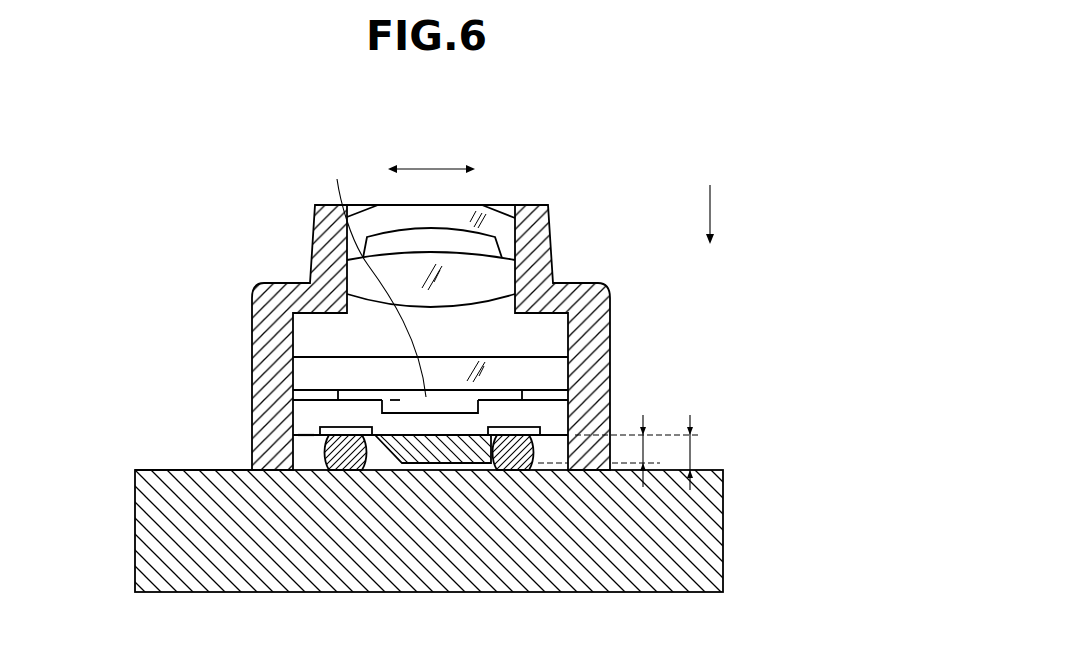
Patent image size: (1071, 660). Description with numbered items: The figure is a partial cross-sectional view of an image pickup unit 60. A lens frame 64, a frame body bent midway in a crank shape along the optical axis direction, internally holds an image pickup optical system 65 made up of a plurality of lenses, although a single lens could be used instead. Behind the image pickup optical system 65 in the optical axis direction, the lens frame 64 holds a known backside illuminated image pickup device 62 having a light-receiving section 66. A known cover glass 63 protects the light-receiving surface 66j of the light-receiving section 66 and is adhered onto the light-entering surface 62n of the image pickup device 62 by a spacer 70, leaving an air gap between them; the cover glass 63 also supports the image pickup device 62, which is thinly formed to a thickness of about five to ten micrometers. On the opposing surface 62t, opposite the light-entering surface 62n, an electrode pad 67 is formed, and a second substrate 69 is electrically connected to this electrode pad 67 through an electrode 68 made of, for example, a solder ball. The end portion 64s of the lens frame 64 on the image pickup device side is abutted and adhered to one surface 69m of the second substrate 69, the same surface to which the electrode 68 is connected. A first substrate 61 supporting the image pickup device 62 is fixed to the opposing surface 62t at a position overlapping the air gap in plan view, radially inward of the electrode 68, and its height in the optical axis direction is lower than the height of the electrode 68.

The image pickup unit 60 is at (630, 178).
The first substrate 61 is at (433, 458).
The image pickup device 62 is at (318, 419).
The light-entering surface 62n is at (357, 399).
The opposing surface 62t is at (306, 438).
The cover glass 63 is at (310, 377).
The lens frame 64 is at (549, 222).
The end portion 64s is at (583, 463).
The image pickup optical system 65 is at (490, 279).
The light-receiving section 66 is at (430, 408).
The light-receiving surface 66j is at (395, 399).
The electrode pad 67 is at (315, 432).
The electrode 68 is at (324, 468).
The second substrate 69 is at (592, 540).
The one surface 69m is at (183, 470).
The spacer 70 is at (310, 395).